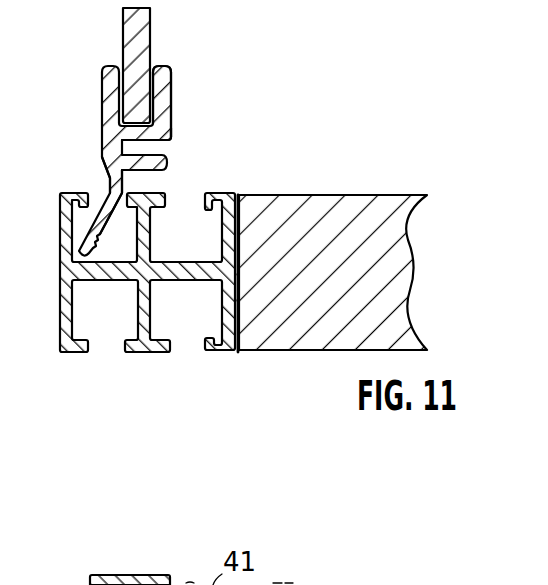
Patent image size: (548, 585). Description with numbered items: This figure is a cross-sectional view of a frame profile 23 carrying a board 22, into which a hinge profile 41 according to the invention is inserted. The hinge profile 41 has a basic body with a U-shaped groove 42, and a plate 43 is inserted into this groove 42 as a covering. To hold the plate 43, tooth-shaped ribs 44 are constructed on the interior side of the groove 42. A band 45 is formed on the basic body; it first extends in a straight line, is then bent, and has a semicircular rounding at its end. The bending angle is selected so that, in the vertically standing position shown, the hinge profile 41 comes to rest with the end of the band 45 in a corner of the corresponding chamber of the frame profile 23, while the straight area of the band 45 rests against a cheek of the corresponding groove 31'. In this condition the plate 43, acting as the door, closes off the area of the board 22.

The board 22 is at (397, 288).
The frame profile 23 is at (238, 352).
The groove 31' is at (147, 272).
The hinge profile 41 is at (103, 147).
The U-shaped groove 42 is at (133, 96).
The plate 43 is at (128, 32).
The tooth-shaped ribs 44 is at (153, 112).
The band 45 is at (113, 192).